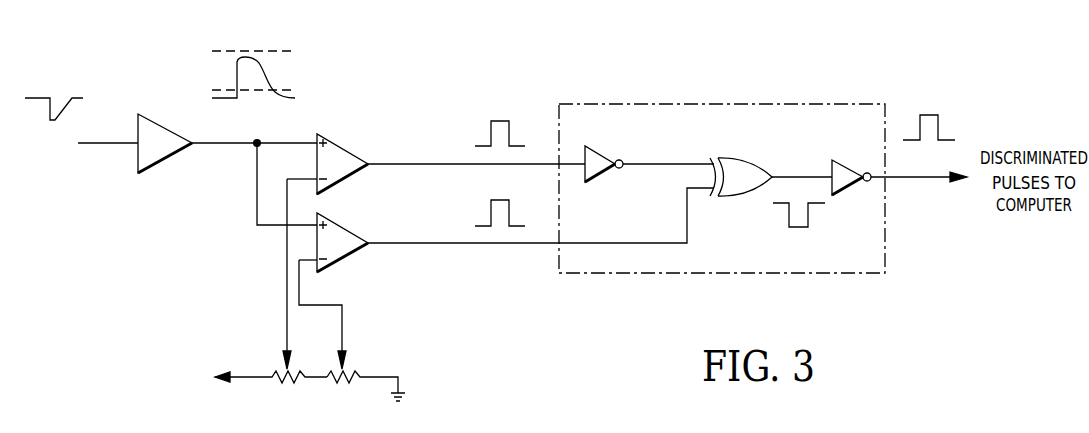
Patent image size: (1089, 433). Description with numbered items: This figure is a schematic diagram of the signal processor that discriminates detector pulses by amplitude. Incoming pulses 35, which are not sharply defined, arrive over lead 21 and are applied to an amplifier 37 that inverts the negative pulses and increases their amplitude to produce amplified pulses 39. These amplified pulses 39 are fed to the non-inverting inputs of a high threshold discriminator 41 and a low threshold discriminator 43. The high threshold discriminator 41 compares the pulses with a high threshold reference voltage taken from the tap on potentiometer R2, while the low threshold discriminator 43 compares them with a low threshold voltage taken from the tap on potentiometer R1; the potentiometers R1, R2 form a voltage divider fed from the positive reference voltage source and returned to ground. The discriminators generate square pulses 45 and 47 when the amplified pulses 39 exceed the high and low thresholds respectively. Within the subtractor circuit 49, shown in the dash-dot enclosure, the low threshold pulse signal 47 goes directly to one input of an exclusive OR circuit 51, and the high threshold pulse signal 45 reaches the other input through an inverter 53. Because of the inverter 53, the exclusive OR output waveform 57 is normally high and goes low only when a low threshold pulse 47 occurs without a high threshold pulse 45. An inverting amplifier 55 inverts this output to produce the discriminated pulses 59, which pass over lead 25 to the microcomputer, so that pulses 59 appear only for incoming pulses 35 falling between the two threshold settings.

The lead 21 is at (112, 145).
The lead 25 is at (905, 180).
The incoming pulses 35 is at (50, 112).
The amplifier 37 is at (171, 128).
The amplified pulses 39 is at (264, 65).
The high threshold discriminator 41 is at (340, 137).
The low threshold discriminator 43 is at (340, 218).
The high threshold pulse signal 45 is at (510, 129).
The low threshold pulse signal 47 is at (510, 218).
The subtractor circuit 49 is at (678, 104).
The exclusive OR circuit 51 is at (737, 158).
The inverter 53 is at (598, 153).
The inverting amplifier 55 is at (842, 161).
The exclusive OR output waveform 57 is at (789, 214).
The output pulses 59 is at (940, 122).
The potentiometer R1 is at (344, 383).
The potentiometer R2 is at (286, 382).